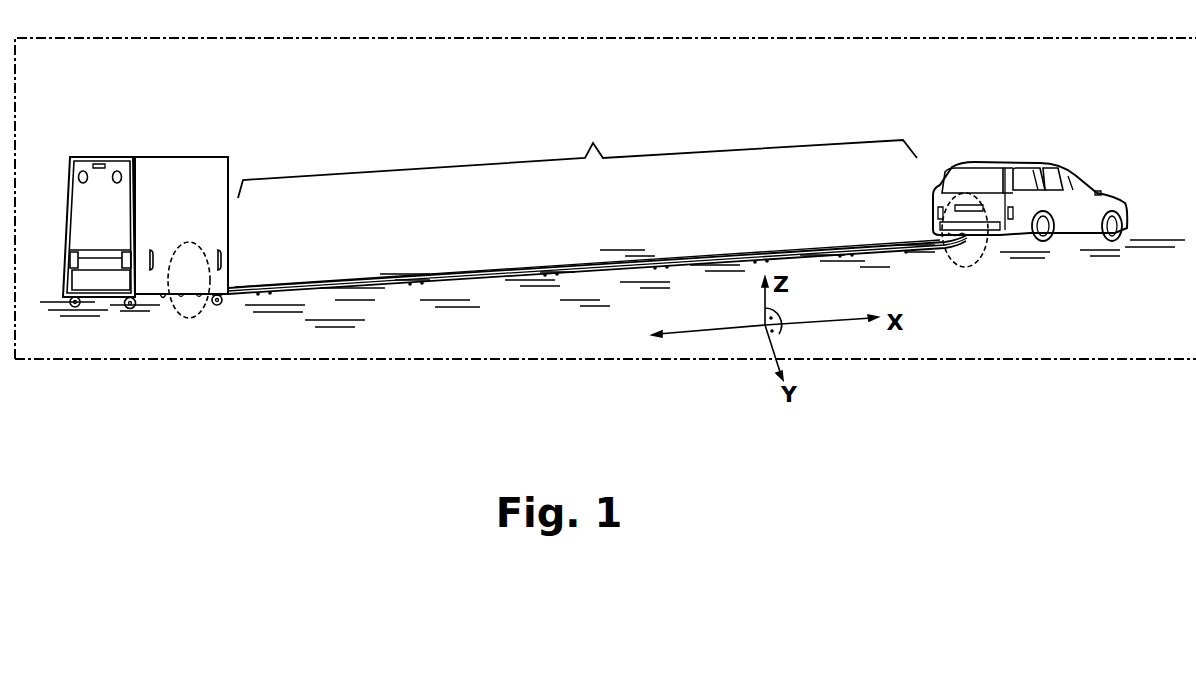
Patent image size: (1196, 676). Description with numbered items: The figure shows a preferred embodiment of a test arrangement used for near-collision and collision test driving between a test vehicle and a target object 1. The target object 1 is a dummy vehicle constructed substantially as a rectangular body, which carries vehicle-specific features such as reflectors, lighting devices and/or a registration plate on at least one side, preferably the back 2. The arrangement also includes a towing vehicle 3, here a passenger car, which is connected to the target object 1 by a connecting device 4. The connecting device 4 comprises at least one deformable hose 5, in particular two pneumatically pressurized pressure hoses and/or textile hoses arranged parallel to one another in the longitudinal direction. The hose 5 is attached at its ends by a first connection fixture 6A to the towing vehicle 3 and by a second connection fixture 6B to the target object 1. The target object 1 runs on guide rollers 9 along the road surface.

The target object 1 is at (182, 181).
The back of the target object 2 is at (100, 205).
The towing vehicle 3 is at (1050, 200).
The connecting device 4 is at (577, 154).
The deformable hose 5 is at (722, 263).
The first connection fixture 6A is at (967, 270).
The second connection fixture 6B is at (195, 318).
The guide rollers 9 is at (130, 308).